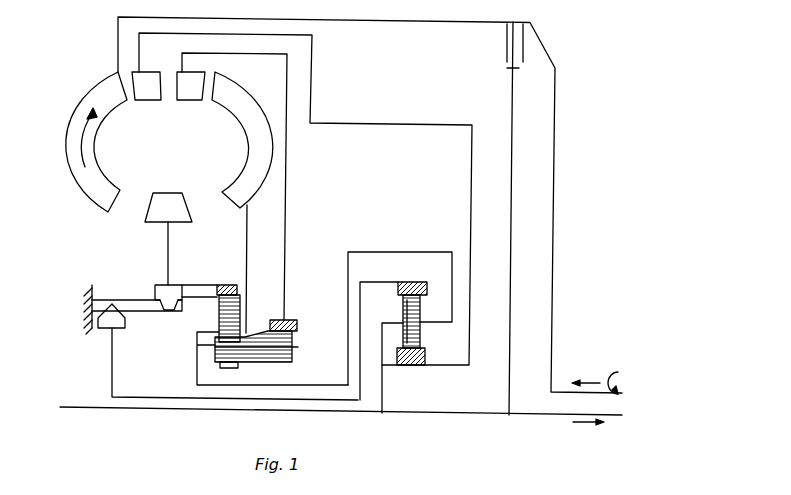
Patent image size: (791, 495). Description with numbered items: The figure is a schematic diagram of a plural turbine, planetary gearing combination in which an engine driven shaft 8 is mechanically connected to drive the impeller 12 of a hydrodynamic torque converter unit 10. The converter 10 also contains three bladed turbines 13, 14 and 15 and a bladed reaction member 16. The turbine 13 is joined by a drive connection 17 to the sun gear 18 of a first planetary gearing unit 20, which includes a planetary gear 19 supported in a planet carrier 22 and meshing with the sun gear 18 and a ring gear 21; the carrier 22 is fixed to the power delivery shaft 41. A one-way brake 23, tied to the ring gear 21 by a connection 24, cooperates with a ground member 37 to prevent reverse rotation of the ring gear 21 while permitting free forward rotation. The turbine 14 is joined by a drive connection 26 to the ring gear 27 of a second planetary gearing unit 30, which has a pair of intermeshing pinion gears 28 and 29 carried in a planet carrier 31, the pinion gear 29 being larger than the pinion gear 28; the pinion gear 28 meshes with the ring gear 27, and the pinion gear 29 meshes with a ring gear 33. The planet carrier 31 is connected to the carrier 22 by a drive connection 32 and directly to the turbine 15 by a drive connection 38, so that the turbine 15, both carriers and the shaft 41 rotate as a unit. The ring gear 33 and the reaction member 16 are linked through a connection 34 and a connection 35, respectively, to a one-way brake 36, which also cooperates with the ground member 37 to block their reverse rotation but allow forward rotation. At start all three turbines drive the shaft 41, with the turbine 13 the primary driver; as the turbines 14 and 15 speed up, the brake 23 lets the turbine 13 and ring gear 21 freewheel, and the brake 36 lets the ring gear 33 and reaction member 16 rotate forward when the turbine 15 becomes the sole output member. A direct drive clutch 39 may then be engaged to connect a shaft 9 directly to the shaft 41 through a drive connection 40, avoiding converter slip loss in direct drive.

The engine driven shaft 8 is at (624, 381).
The shaft 9 is at (555, 143).
The hydrodynamic torque converter unit 10 is at (150, 134).
The impeller 12 is at (73, 126).
The turbine 13 is at (145, 90).
The turbine 14 is at (190, 90).
The turbine 15 is at (230, 112).
The bladed reaction member 16 is at (165, 194).
The drive connection 17 is at (373, 123).
The sun gear 18 is at (412, 366).
The planetary gear 19 is at (421, 306).
The planetary gearing unit 20 is at (422, 328).
The ring gear 21 is at (412, 282).
The planet carrier 22 is at (383, 383).
The one-way brake 23 is at (110, 330).
The connection 24 is at (148, 397).
The drive connection 26 is at (286, 180).
The ring gear 27 is at (290, 320).
The pinion gear 28 is at (290, 362).
The pinion gear 29 is at (218, 320).
The second planetary gearing unit 30 is at (296, 346).
The planet carrier 31 is at (197, 358).
The drive connection 32 is at (396, 252).
The ring gear 33 is at (228, 285).
The connection 34 is at (212, 286).
The connection 35 is at (168, 245).
The one-way brake 36 is at (155, 289).
The ground member 37 is at (150, 313).
The drive connection 38 is at (247, 258).
The direct drive clutch 39 is at (500, 42).
The drive connection 40 is at (514, 112).
The power delivery shaft 41 is at (520, 416).